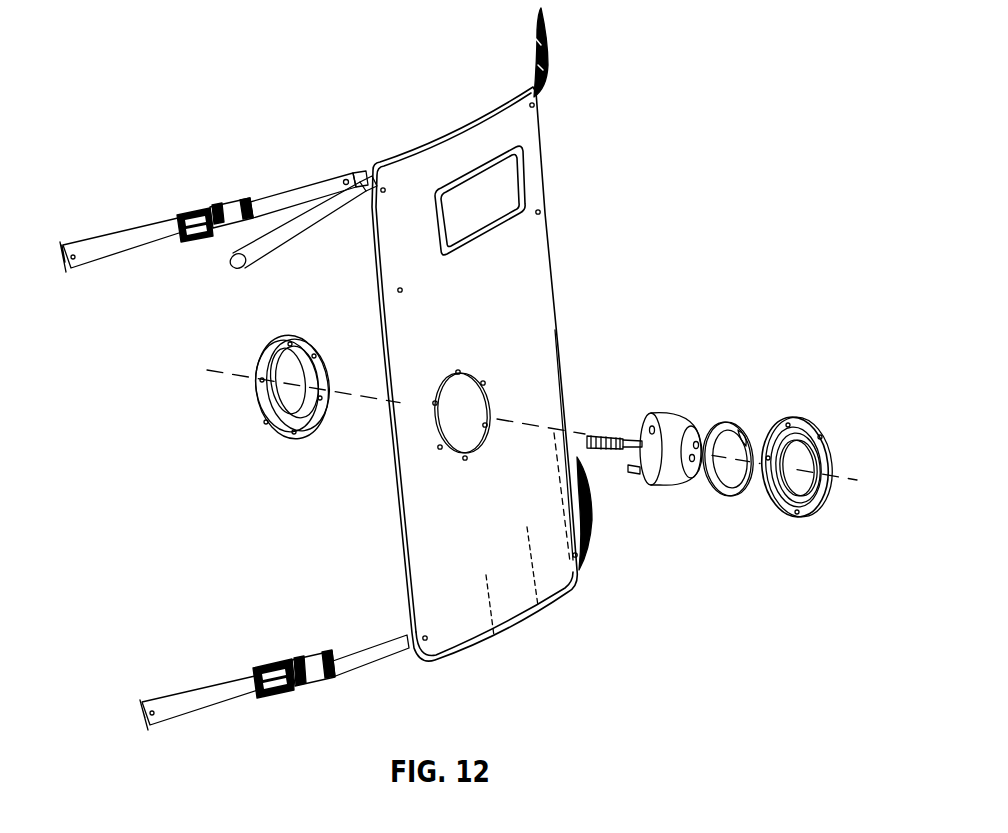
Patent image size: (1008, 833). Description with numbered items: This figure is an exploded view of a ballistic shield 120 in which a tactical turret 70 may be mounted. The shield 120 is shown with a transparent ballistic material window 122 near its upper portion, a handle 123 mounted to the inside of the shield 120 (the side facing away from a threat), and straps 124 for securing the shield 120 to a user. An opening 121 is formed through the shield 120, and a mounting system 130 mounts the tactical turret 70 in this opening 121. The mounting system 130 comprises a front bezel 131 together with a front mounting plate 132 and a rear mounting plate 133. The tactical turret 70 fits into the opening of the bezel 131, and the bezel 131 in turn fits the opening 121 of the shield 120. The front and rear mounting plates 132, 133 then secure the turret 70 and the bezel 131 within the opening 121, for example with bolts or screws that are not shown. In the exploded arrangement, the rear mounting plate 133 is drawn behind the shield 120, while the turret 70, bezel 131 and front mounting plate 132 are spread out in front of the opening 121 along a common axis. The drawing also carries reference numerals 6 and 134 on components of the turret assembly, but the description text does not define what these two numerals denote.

The pin 6 is at (606, 426).
The tactical turret 70 is at (676, 398).
The ballistic shield 120 is at (579, 222).
The opening 121 is at (483, 413).
The transparent ballistic material window 122 is at (478, 202).
The handle 123 is at (257, 243).
The straps 124 is at (267, 190).
The mounting system 130 is at (292, 528).
The front bezel 131 is at (722, 494).
The front mounting plate 132 is at (785, 513).
The rear mounting plate 133 is at (257, 400).
The gasket tab 134 is at (740, 427).